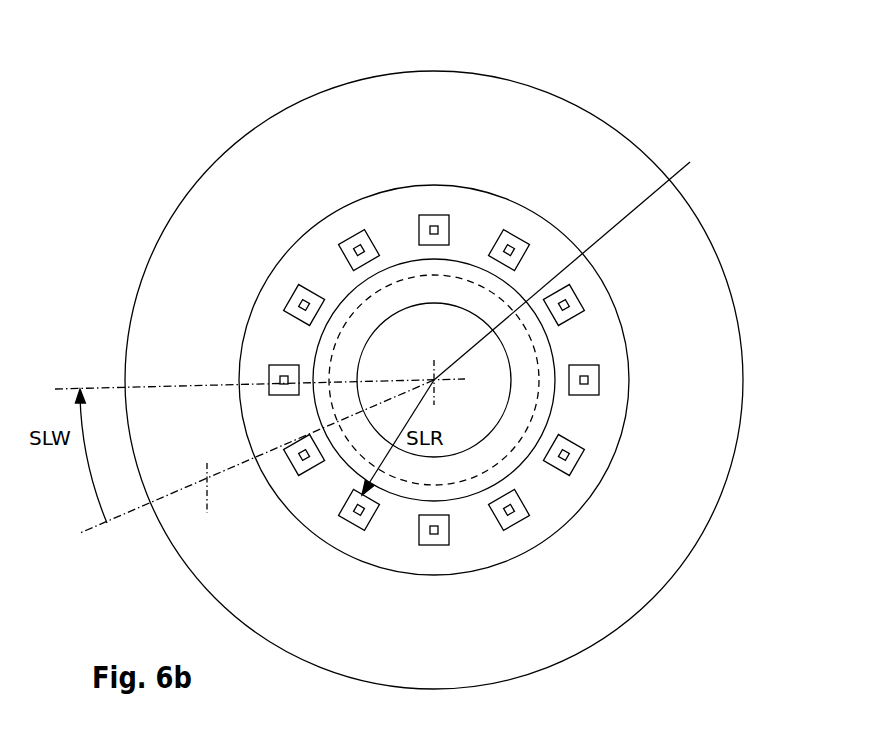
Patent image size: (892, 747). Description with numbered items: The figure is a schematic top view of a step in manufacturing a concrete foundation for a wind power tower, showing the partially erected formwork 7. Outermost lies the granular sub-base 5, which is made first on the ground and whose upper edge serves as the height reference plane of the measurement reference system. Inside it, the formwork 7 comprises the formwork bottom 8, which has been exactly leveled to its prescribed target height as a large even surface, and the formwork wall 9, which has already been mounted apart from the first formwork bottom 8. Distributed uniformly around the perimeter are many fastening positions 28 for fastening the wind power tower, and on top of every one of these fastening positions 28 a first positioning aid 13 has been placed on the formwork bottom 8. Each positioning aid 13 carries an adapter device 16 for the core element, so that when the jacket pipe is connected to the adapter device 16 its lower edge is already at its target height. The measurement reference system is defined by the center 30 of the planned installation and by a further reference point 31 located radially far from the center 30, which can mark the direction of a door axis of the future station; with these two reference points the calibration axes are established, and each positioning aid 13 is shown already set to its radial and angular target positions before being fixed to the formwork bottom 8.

The granular sub-base 5 is at (278, 178).
The formwork 7 is at (280, 242).
The formwork bottom 8 is at (548, 255).
The formwork wall 9 is at (397, 262).
The positioning aid 13 is at (587, 372).
The adapter device 16 is at (565, 455).
The fastening position 28 is at (288, 296).
The center 30 is at (391, 273).
The reference point 31 is at (205, 482).